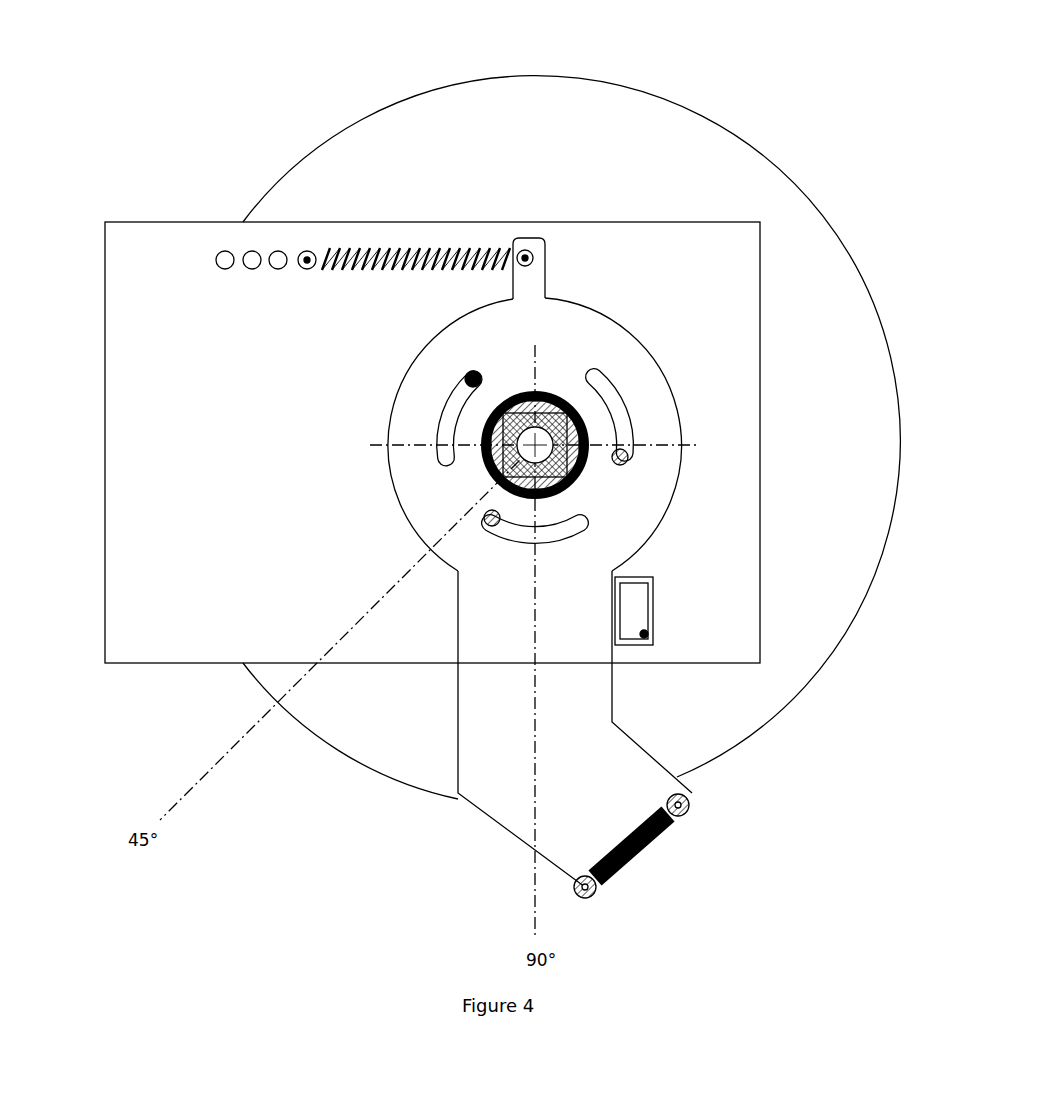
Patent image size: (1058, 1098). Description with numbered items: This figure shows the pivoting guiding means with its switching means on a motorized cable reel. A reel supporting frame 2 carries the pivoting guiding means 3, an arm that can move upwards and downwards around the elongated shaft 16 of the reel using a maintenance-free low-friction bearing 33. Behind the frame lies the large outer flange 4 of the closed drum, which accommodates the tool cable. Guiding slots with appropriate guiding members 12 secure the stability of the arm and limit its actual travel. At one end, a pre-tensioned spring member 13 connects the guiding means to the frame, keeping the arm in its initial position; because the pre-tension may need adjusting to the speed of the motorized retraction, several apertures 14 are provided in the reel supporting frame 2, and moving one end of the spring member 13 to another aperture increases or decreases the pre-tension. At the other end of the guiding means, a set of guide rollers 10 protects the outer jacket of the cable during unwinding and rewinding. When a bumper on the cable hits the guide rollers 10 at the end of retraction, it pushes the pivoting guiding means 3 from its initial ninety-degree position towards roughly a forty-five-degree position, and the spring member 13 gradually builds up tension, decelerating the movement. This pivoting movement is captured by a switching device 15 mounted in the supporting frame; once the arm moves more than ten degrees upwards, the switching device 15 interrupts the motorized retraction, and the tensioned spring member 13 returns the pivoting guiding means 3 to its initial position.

The reel supporting frame 2 is at (133, 220).
The pivoting guiding means 3 is at (503, 840).
The outer flange 4 is at (807, 688).
The guide rollers 10 is at (640, 860).
The guiding members 12 is at (480, 502).
The spring member 13 is at (430, 268).
The apertures 14 is at (300, 272).
The switching device 15 is at (637, 578).
The elongated shaft 16 is at (582, 405).
The bearing 33 is at (575, 485).